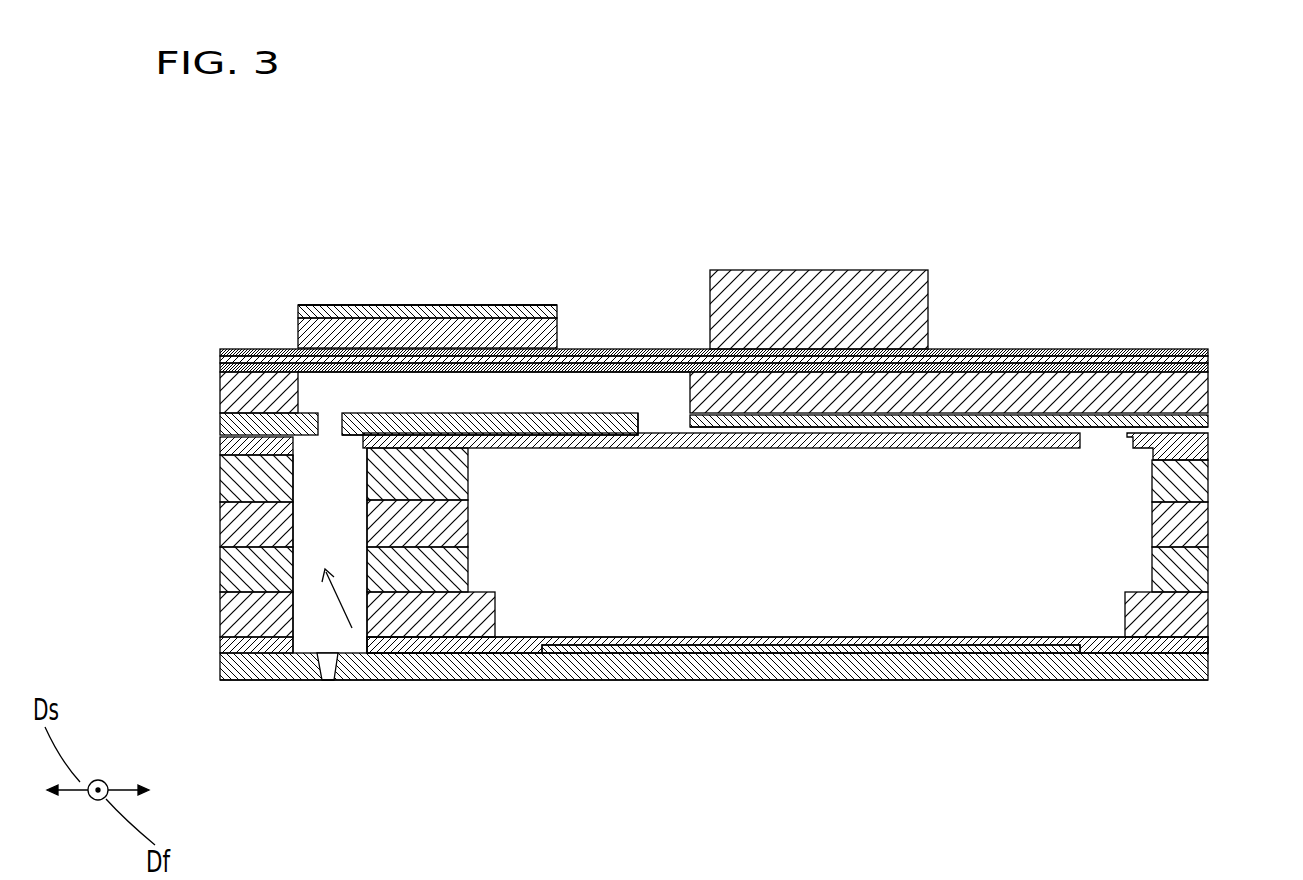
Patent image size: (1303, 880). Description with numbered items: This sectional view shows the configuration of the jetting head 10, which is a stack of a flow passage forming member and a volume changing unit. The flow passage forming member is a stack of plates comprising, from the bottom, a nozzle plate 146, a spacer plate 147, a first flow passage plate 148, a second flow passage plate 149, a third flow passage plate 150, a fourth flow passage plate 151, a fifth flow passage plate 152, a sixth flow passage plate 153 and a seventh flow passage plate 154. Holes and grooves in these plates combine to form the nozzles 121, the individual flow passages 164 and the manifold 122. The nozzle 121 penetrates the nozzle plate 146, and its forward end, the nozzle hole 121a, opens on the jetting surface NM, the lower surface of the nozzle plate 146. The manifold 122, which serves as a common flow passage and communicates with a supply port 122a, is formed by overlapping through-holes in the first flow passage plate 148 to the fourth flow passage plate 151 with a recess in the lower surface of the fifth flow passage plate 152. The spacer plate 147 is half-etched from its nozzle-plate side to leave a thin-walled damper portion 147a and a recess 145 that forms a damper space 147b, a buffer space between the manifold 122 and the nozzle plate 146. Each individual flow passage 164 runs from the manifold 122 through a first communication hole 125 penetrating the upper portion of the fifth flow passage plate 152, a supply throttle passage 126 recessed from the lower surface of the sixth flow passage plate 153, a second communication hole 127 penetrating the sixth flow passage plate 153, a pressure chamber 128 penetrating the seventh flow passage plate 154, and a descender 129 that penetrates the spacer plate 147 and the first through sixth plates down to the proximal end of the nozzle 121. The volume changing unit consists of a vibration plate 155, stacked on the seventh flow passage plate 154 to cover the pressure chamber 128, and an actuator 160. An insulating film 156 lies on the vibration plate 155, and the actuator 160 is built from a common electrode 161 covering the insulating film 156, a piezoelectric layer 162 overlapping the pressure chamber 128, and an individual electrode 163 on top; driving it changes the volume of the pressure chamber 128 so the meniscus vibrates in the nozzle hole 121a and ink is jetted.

The jetting head 10 is at (736, 160).
The actuator 160 is at (528, 203).
The individual electrode 163 is at (368, 305).
The piezoelectric layer 162 is at (421, 305).
The common electrode 161 is at (493, 305).
The descender 129 is at (293, 518).
The pressure chamber 128 is at (587, 372).
The second communication hole 127 is at (638, 428).
The supply port 122a is at (887, 302).
The manifold 122 is at (997, 447).
The supply throttle passage 126 is at (1048, 427).
The first communication hole 125 is at (1083, 442).
The insulating film 156 is at (1210, 352).
The vibration plate 155 is at (1210, 362).
The seventh flow passage plate 154 is at (1210, 390).
The sixth flow passage plate 153 is at (1210, 421).
The fifth flow passage plate 152 is at (1210, 449).
The fourth flow passage plate 151 is at (1210, 483).
The third flow passage plate 150 is at (1210, 520).
The second flow passage plate 149 is at (1210, 560).
The first flow passage plate 148 is at (1210, 600).
The spacer plate 147 is at (1210, 645).
The damper portion 147a is at (575, 653).
The damper space 147b is at (667, 653).
The recess 145 is at (707, 763).
The nozzle plate 146 is at (1210, 668).
The jetting surface NM is at (253, 682).
The nozzle 121 is at (308, 682).
The nozzle hole 121a is at (327, 682).
The individual flow passage 164 is at (408, 655).